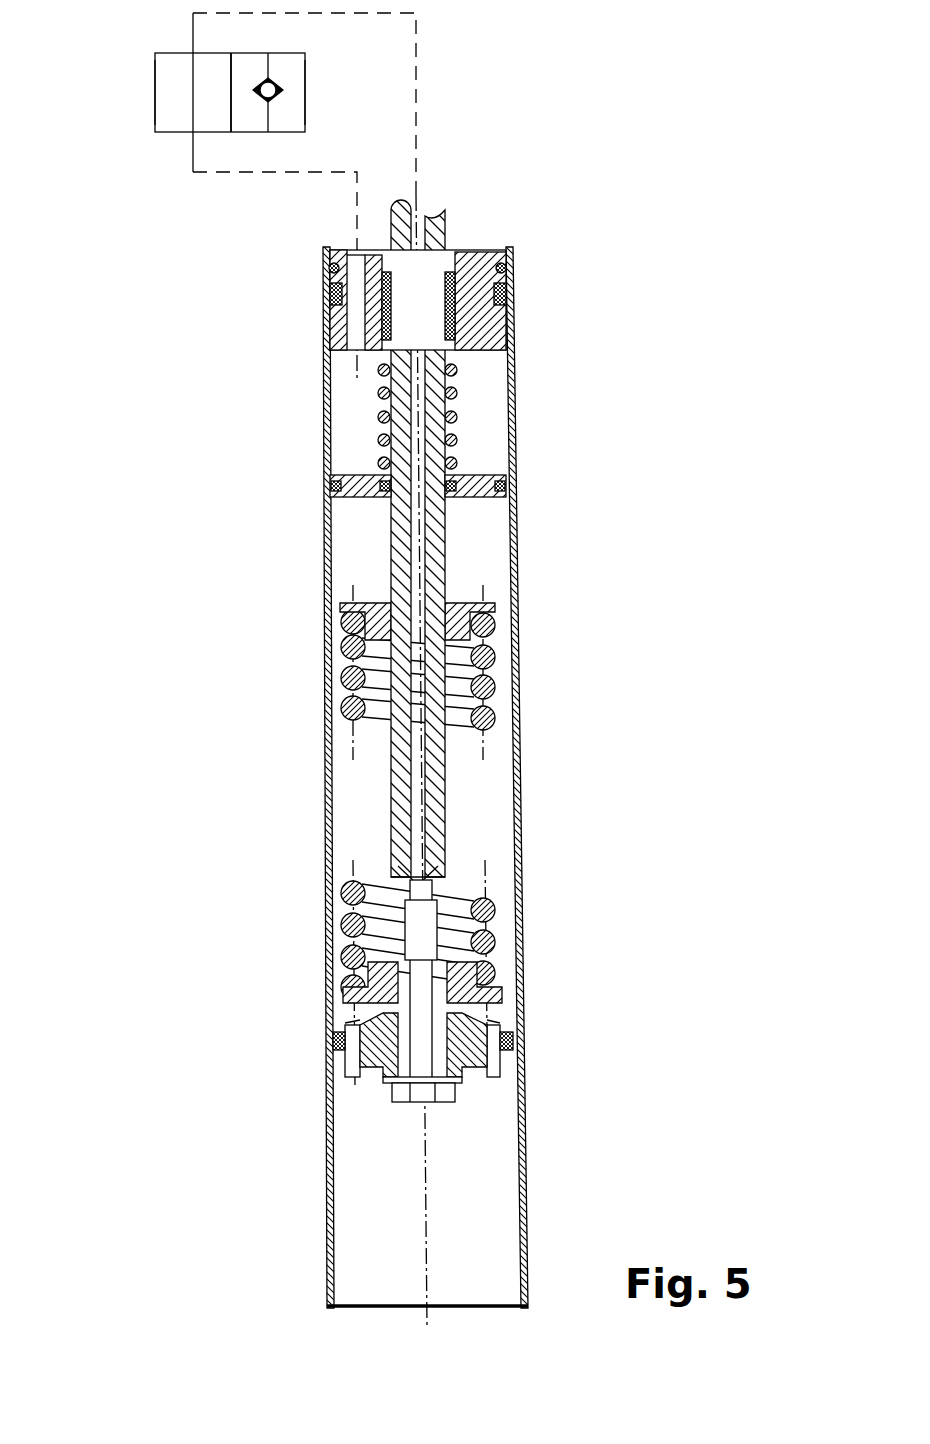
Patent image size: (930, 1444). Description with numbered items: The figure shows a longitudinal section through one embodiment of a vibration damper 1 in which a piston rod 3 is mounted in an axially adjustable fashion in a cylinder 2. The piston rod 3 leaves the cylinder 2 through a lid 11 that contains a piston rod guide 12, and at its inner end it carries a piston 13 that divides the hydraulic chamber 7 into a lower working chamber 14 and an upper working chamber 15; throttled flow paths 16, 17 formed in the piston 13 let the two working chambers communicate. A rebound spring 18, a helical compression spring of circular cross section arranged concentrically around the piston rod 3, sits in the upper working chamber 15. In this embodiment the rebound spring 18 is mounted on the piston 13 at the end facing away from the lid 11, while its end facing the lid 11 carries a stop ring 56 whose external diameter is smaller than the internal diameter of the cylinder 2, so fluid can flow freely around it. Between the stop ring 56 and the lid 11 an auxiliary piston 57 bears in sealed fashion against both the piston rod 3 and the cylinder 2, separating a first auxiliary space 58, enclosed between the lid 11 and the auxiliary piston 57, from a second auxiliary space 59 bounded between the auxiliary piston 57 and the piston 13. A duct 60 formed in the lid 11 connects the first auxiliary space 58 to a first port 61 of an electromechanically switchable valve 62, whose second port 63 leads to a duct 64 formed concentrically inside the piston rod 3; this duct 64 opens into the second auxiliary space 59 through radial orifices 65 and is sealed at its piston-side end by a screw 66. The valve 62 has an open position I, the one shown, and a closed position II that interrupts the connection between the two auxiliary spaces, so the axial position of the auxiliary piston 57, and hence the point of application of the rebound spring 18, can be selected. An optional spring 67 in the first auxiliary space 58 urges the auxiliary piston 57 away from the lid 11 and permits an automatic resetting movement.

The vibration damper 1 is at (445, 686).
The cylinder 2 is at (318, 764).
The piston rod 3 is at (385, 405).
The hydraulic chamber 7 is at (495, 1234).
The lid 11 is at (510, 272).
The piston rod guide 12 is at (510, 330).
The piston 13 is at (418, 1040).
The lower working chamber 14 is at (475, 1145).
The upper working chamber 15 is at (482, 571).
The throttled flow path 16 is at (510, 1015).
The throttled flow path 17 is at (335, 1020).
The rebound spring 18 is at (510, 940).
The stop ring 56 is at (340, 610).
The auxiliary piston 57 is at (474, 498).
The first auxiliary space 58 is at (470, 415).
The second auxiliary space 59 is at (482, 533).
The duct 60 is at (330, 277).
The first port 61 is at (193, 132).
The electromechanically switchable valve 62 is at (231, 140).
The second port 63 is at (193, 53).
The duct 64 is at (422, 240).
The radial orifices 65 is at (420, 877).
The screw 66 is at (402, 1097).
The spring 67 is at (385, 437).
The open position I is at (162, 105).
The closed position II is at (305, 100).